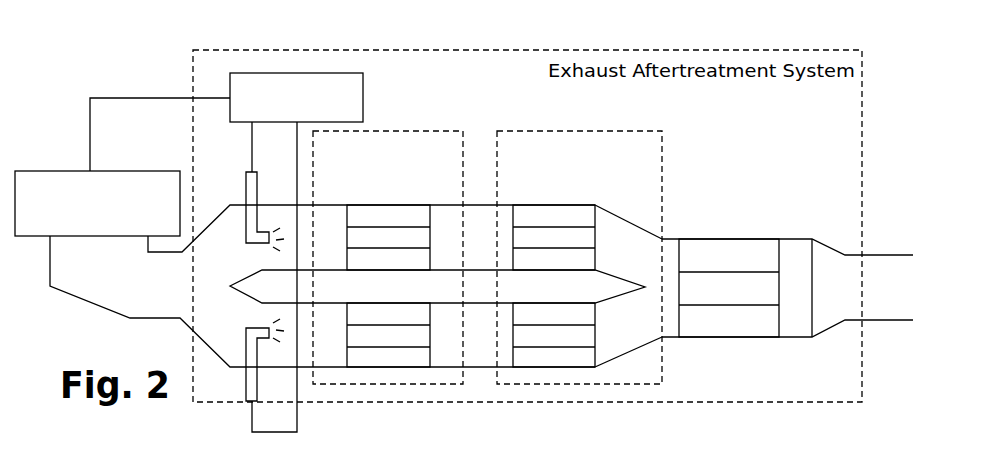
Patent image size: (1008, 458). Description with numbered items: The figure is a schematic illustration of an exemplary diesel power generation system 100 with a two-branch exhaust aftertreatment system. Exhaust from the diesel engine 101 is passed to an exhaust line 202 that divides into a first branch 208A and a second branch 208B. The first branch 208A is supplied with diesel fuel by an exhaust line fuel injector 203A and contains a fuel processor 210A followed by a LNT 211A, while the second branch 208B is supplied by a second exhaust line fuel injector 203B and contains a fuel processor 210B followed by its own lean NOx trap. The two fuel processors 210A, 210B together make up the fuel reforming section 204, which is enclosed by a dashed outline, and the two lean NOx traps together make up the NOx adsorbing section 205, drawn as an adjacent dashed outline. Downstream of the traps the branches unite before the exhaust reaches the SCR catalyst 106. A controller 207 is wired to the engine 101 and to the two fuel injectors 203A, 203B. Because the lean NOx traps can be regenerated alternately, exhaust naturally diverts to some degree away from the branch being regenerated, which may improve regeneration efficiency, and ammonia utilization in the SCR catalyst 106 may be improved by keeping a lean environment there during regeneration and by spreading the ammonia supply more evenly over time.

The power generation system 100 is at (150, 78).
The diesel engine 101 is at (82, 171).
The exhaust line 202 is at (207, 228).
The exhaust line fuel injector 203A is at (246, 172).
The exhaust line fuel injector 203B is at (245, 400).
The fuel reforming section 204 is at (415, 131).
The NOx adsorbing section 205 is at (597, 131).
The controller 207 is at (330, 73).
The branch 208A is at (615, 213).
The branch 208B is at (615, 362).
The fuel processor 210A is at (367, 205).
The fuel processor 210B is at (387, 367).
The LNT 211A is at (550, 205).
The SCR catalyst 106 is at (730, 239).